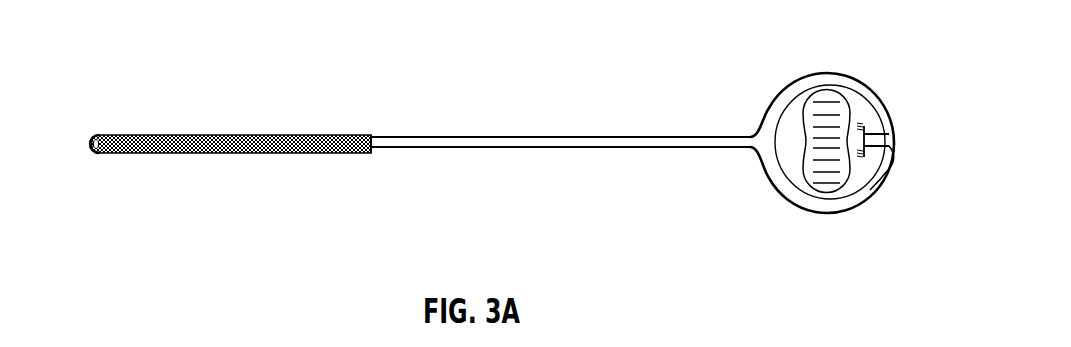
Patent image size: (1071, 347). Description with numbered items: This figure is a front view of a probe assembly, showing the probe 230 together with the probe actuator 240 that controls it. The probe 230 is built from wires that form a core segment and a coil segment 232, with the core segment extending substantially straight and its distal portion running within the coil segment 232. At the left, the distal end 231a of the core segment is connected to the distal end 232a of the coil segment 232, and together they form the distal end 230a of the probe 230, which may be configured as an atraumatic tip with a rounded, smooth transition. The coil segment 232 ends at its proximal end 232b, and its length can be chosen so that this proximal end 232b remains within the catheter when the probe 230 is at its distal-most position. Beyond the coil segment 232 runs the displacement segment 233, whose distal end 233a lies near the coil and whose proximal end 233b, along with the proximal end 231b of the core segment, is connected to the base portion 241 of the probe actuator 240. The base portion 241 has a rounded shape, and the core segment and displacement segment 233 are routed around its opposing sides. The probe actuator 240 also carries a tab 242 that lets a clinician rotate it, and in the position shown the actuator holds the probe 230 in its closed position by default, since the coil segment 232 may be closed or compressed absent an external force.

The probe 230 is at (213, 63).
The distal end of probe 230a is at (95, 156).
The distal end of core segment 231a is at (77, 89).
The proximal end of core segment 231b is at (875, 153).
The coil segment 232 is at (262, 153).
The distal end of coil segment 232a is at (100, 134).
The proximal end of coil segment 232b is at (371, 152).
The displacement segment 233 is at (457, 132).
The distal end of displacement segment 233a is at (360, 132).
The proximal end of displacement segment 233b is at (872, 133).
The probe actuator 240 is at (847, 43).
The base portion 241 is at (793, 95).
The tab 242 is at (817, 185).